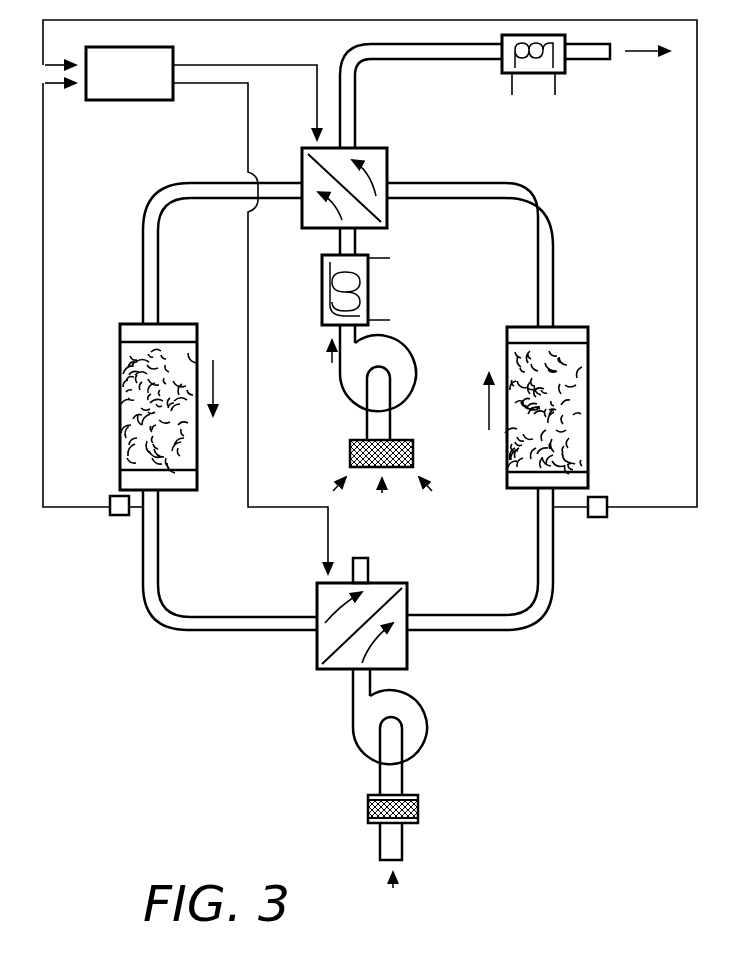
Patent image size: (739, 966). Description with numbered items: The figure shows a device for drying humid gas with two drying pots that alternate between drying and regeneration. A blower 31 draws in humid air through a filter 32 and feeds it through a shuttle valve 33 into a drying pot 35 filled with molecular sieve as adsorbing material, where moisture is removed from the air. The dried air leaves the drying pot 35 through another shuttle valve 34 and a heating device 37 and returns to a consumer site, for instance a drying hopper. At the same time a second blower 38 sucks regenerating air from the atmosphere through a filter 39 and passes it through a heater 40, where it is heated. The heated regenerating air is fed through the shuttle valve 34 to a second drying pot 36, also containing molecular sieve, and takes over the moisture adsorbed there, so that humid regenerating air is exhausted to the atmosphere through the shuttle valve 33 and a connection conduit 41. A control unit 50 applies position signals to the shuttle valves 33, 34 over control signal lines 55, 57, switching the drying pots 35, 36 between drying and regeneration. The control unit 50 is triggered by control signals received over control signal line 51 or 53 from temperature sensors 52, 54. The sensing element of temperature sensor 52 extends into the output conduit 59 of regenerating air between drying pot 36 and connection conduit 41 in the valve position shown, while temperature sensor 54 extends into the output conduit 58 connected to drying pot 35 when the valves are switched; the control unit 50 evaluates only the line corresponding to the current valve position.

The blower 31 is at (428, 731).
The filter 32 is at (420, 812).
The shuttle valve 33 is at (409, 600).
The shuttle valve 34 is at (388, 165).
The drying pot 35 is at (590, 421).
The second drying pot 36 is at (120, 400).
The heating device 37 is at (536, 74).
The blower 38 is at (350, 405).
The filter 39 is at (348, 452).
The heater 40 is at (322, 282).
The connection conduit 41 is at (370, 572).
The control unit 50 is at (148, 102).
The control signal line 51 is at (45, 242).
The temperature sensor 52 is at (126, 517).
The control signal line 53 is at (697, 218).
The temperature sensor 54 is at (604, 518).
The control signal line 55 is at (246, 122).
The control signal line 57 is at (314, 96).
The output conduit 58 is at (545, 618).
The output conduit 59 is at (155, 619).